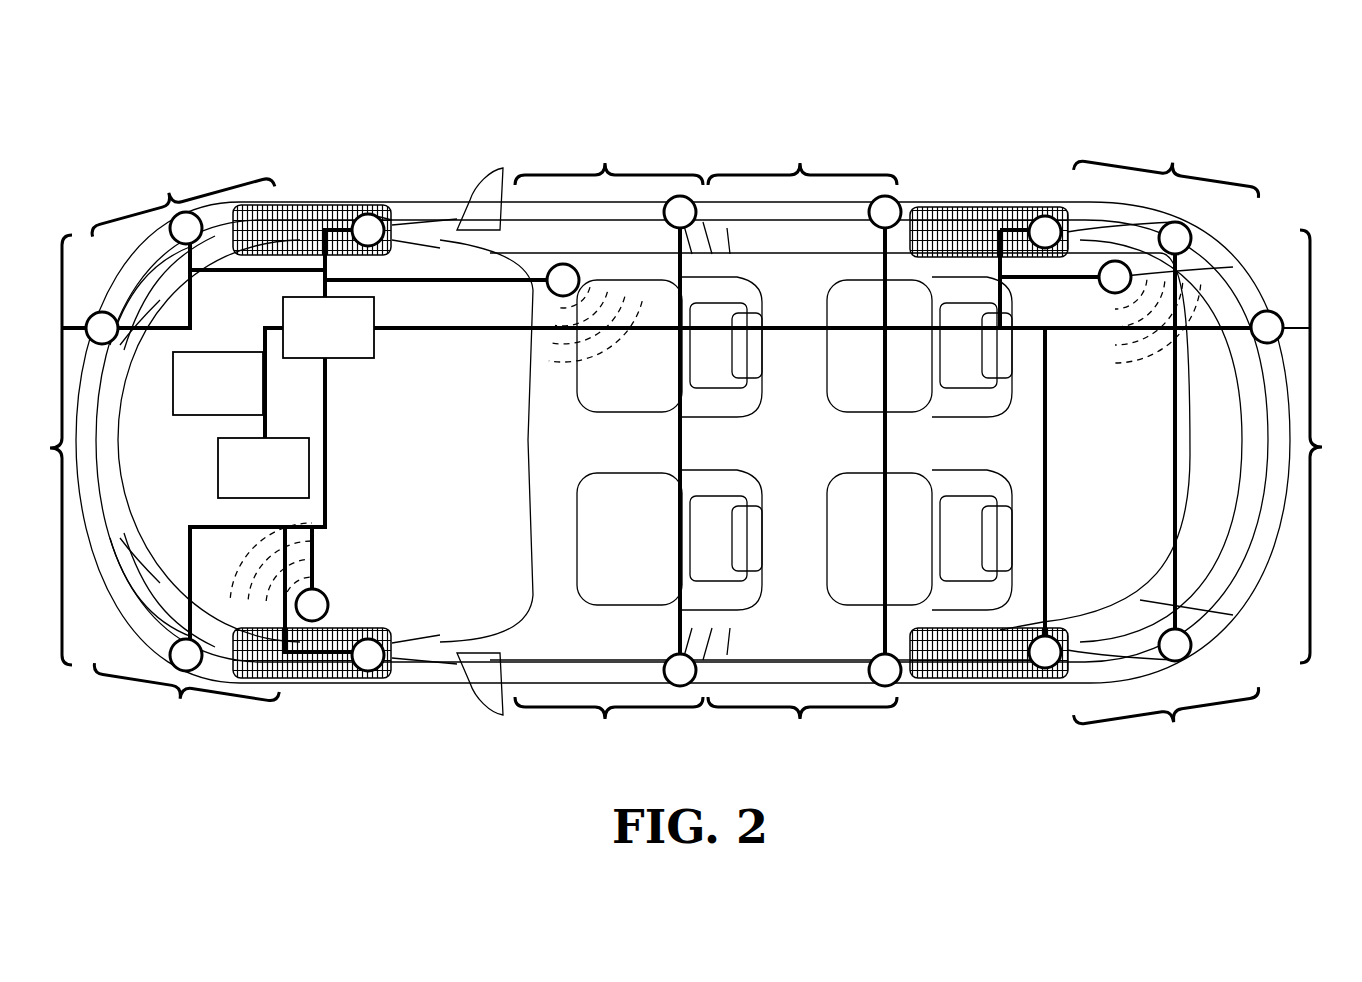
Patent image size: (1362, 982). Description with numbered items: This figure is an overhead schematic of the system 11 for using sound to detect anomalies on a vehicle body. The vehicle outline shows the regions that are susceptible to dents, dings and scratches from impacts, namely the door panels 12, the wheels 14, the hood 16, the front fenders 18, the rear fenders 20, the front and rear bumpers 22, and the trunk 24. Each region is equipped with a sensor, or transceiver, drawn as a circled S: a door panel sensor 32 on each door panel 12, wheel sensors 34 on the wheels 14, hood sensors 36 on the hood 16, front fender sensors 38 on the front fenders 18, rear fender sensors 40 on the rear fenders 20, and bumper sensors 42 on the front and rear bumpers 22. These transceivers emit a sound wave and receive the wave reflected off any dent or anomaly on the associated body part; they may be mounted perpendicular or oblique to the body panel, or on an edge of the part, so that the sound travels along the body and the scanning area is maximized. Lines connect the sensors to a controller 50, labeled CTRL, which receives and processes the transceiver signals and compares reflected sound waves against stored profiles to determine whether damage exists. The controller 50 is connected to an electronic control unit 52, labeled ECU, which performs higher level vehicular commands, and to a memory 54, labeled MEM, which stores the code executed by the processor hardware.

The system 11 is at (1148, 70).
The door panels 12 is at (706, 443).
The wheels 14 is at (290, 205).
The hood 16 is at (140, 384).
The front fenders 18 is at (183, 446).
The rear fenders 20 is at (1168, 444).
The front and rear bumpers 22 is at (688, 447).
The trunk 24 is at (1094, 468).
The door panel sensor 32 is at (681, 196).
The wheel sensors 34 is at (372, 214).
The hood sensors 36 is at (328, 603).
The front fender sensors 38 is at (188, 212).
The rear fender sensors 40 is at (1192, 238).
The bumper sensors 42 is at (62, 328).
The controller 50 is at (350, 358).
The electronic control unit 52 is at (193, 415).
The memory 54 is at (218, 456).